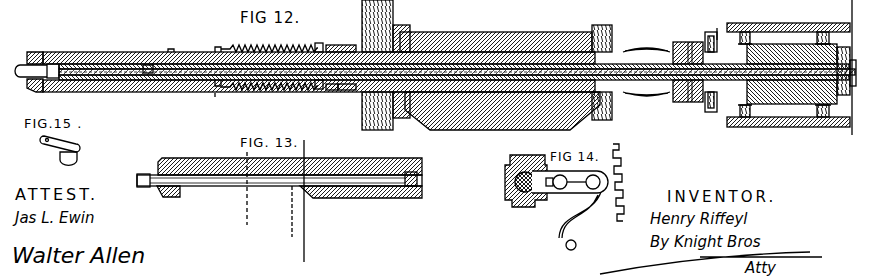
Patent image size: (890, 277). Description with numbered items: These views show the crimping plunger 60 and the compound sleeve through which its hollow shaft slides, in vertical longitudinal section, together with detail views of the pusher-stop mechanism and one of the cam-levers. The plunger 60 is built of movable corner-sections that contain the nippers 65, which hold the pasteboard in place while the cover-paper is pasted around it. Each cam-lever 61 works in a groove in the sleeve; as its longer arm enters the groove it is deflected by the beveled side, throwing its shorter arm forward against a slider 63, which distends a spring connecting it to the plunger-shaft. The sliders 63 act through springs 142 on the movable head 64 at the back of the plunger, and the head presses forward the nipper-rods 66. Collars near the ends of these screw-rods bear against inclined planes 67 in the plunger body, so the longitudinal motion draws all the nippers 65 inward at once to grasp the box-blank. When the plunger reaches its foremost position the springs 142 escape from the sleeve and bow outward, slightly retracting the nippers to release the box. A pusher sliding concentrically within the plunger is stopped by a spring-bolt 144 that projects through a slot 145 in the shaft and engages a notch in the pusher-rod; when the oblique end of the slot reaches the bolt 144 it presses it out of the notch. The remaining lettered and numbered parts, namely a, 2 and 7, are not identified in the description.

In FIG. 12, the barrel/casing 2 is at (215, 96).
In FIG. 13, the barrel/casing 2 is at (225, 188).
In FIG. 12, the frame wall 7 is at (381, 65).
In FIG. 13, the frame wall 7 is at (310, 239).
In FIG. 14, the frame wall 7 is at (591, 197).
In FIG. 12, the lug a is at (171, 46).
In FIG. 12, the plunger 60 is at (330, 95).
In FIG. 12, the cam-lever 61 is at (341, 72).
In FIG. 15, the cam-lever 61 is at (65, 150).
In FIG. 14, the cam-lever 61 is at (526, 180).
In FIG. 12, the slider 63 is at (326, 65).
In FIG. 12, the movable head 64 is at (688, 65).
In FIG. 12, the nippers 65 is at (798, 25).
In FIG. 12, the nipper-rods 66 is at (715, 56).
In FIG. 12, the inclined planes 67 is at (740, 58).
In FIG. 12, the springs 142 is at (646, 73).
In FIG. 13, the spring-bolt 144 is at (291, 201).
In FIG. 14, the spring-bolt 144 is at (572, 173).
In FIG. 13, the slot 145 is at (289, 198).